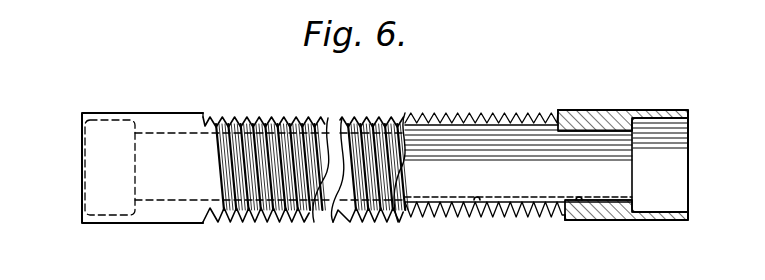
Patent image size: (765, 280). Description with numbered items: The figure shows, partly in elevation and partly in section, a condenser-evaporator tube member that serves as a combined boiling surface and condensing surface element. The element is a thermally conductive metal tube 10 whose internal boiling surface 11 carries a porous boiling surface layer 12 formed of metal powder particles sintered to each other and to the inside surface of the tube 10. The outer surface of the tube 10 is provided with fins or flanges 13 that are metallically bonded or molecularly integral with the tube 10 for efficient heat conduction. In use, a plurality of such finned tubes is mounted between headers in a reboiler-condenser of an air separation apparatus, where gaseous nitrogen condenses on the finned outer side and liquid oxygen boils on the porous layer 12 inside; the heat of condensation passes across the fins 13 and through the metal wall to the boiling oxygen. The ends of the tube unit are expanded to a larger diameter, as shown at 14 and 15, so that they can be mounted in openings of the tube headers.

The thermally conductive metal tube 10 is at (99, 110).
The internal boiling surface 11 is at (163, 131).
The porous boiling surface layer 12 is at (478, 199).
The fins 13 is at (370, 219).
The expanded tube end 14 is at (678, 210).
The expanded tube end 15 is at (98, 217).